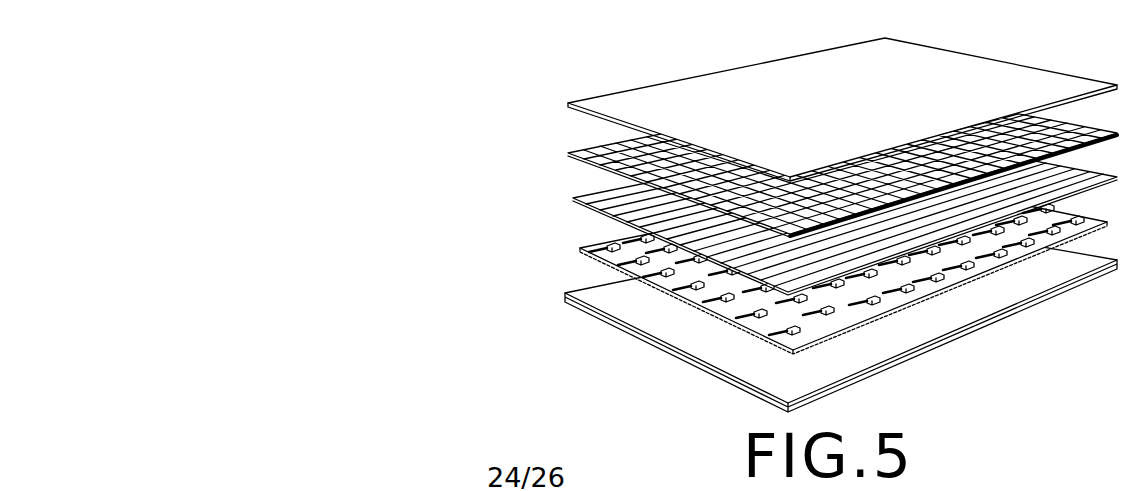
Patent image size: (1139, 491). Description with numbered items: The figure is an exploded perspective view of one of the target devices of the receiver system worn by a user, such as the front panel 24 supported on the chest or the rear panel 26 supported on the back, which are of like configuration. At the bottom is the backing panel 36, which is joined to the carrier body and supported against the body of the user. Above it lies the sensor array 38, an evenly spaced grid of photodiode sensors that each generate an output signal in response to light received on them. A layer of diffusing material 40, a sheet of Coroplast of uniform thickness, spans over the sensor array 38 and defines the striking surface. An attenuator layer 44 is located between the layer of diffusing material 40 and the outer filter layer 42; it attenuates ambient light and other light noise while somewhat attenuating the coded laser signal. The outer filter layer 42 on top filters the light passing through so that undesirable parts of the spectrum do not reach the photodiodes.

The front panel 24 is at (421, 363).
The rear panel 26 is at (773, 225).
The backing panel 36 is at (630, 310).
The sensor array 38 is at (592, 241).
The layer of diffusing material 40 is at (587, 195).
The outer filter layer 42 is at (593, 97).
The attenuator layer 44 is at (590, 152).